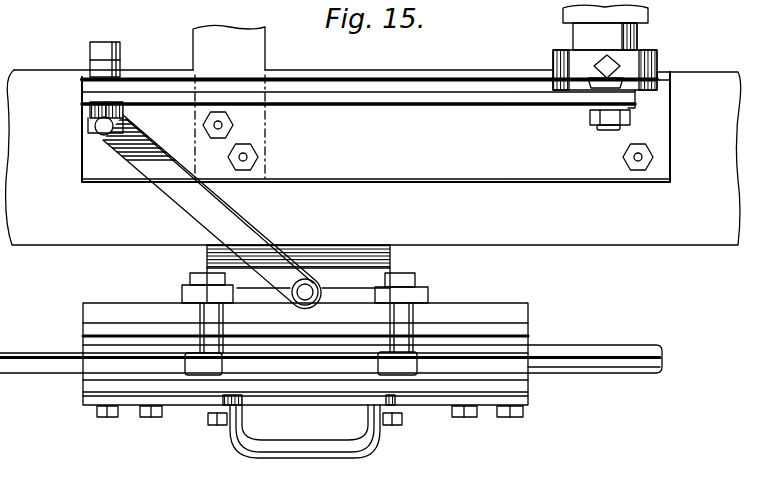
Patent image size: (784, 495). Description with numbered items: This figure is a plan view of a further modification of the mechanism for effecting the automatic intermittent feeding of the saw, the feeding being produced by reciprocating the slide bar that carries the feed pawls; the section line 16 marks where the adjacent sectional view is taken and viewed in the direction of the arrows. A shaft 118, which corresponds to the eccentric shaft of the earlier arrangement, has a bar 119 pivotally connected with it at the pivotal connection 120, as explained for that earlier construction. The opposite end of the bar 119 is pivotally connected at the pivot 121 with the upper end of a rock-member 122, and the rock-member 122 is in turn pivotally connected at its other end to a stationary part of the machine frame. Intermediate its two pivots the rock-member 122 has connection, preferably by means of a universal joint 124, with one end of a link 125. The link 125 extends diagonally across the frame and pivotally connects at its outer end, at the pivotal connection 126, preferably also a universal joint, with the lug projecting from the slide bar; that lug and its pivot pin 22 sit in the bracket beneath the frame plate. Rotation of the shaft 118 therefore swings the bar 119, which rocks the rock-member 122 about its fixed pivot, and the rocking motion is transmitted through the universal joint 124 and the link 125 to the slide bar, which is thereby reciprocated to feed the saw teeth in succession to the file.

The section line 16- 16 is at (178, 264).
The pivot pin 22 is at (318, 292).
The shaft 118 is at (638, 44).
The bar 119 is at (489, 101).
The pivotal connection 120 is at (606, 131).
The pivot 121 is at (92, 110).
The rock-member 122 is at (90, 83).
The universal joint 124 is at (98, 133).
The link 125 is at (178, 182).
The pivotal connection 126 is at (338, 250).